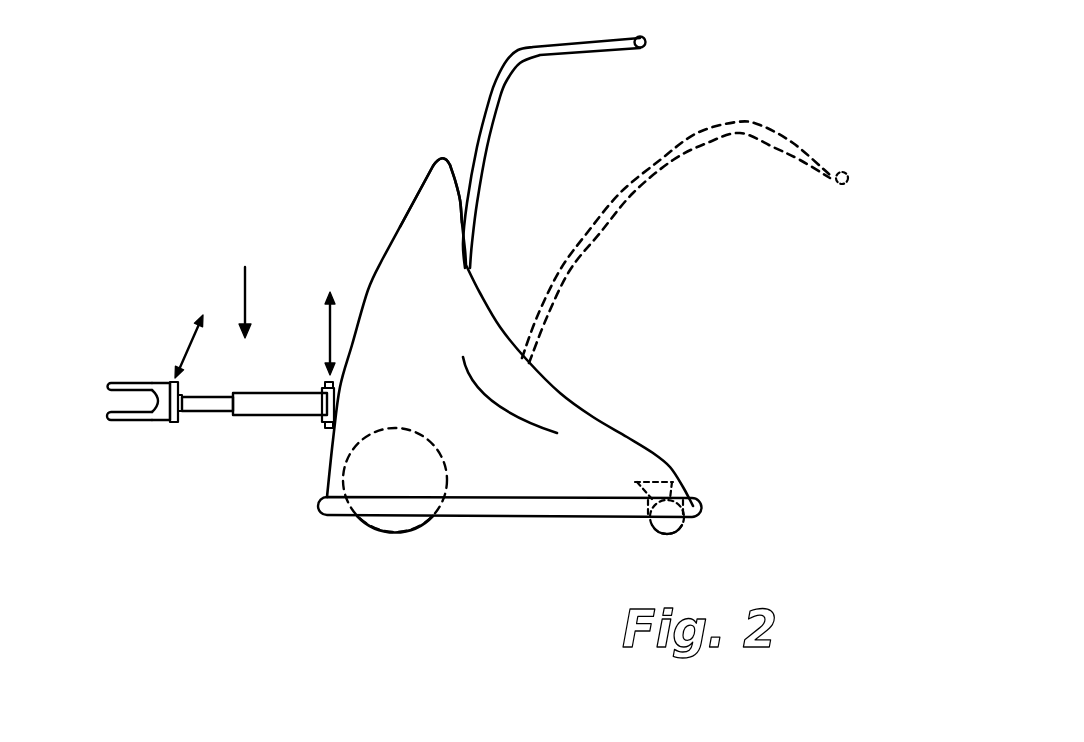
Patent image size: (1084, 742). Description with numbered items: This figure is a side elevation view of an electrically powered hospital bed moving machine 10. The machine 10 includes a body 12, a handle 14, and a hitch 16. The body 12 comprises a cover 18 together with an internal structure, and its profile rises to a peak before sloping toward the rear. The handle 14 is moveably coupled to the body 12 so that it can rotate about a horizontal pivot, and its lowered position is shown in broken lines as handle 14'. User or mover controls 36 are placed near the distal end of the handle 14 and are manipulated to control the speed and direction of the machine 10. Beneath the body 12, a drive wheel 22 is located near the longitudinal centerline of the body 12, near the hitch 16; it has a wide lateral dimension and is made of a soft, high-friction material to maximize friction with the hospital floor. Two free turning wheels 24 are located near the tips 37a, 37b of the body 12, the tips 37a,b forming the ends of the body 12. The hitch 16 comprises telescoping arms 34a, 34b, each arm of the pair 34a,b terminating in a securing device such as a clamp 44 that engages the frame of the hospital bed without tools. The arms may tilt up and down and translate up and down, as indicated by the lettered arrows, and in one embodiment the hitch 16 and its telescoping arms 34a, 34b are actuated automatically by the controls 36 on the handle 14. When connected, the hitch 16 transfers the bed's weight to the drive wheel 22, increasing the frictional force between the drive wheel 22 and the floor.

The hospital bed moving machine 10 is at (426, 72).
The body 12 is at (585, 393).
The handle 14 is at (551, 153).
The lowered position of handle 14' is at (685, 235).
The hitch 16 is at (246, 284).
The cover 18 is at (423, 232).
The drive wheel 22 is at (422, 519).
The free turning wheels 24 is at (678, 527).
The telescoping arms 34a,b is at (258, 430).
The telescoping arm 34a is at (207, 404).
The telescoping arm 34b is at (229, 420).
The controls 36 is at (642, 50).
The tips of the body 37a,b is at (720, 465).
The tip of the body 37a is at (654, 490).
The tip of the body 37b is at (685, 463).
The clamp 44 is at (117, 427).